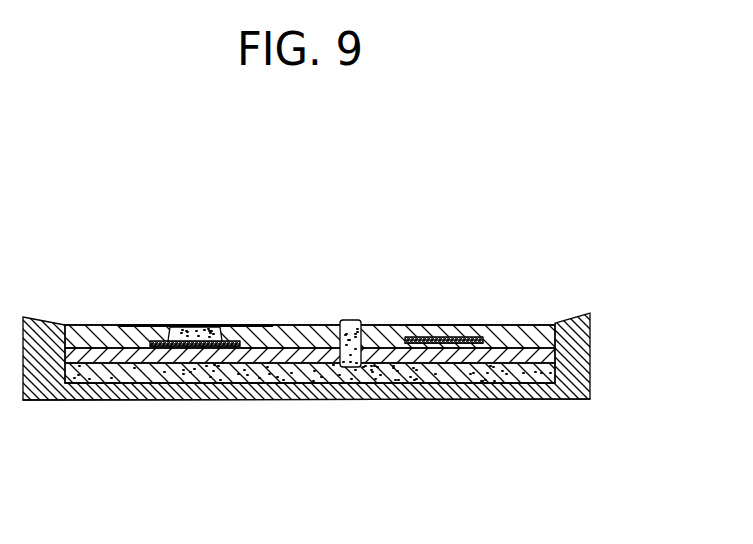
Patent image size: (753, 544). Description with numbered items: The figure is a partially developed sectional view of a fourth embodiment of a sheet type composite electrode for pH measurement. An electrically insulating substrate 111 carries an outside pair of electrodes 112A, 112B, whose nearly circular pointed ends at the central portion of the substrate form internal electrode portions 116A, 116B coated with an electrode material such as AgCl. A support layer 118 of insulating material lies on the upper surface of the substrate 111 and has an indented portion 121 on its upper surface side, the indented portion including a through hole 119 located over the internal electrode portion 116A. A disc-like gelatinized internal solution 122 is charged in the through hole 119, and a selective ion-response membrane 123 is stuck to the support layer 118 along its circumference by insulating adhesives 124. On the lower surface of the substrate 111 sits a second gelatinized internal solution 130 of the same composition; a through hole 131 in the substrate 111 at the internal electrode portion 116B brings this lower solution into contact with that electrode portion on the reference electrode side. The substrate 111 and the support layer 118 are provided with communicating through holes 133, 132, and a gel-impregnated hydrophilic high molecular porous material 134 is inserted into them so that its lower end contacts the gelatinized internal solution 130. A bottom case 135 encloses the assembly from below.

The substrate 111 is at (244, 385).
The outside electrode 112A is at (178, 345).
The outside electrode 112B is at (472, 386).
The internal electrode portion 116A is at (157, 325).
The internal electrode portion 116B is at (435, 323).
The support layer 118 is at (300, 323).
The through hole 119 is at (215, 326).
The indented portion 121 is at (272, 323).
The gelatinized internal solution 122 is at (205, 325).
The selective ion-response membrane 123 is at (183, 326).
The adhesives 124 is at (118, 325).
The gelatinized internal solution 130 is at (317, 400).
The through hole 131 is at (440, 352).
The through hole 132 is at (356, 322).
The through hole 133 is at (367, 402).
The gel-impregnated hydrophilic high molecular porous material 134 is at (342, 320).
The bottom case 135 is at (590, 351).